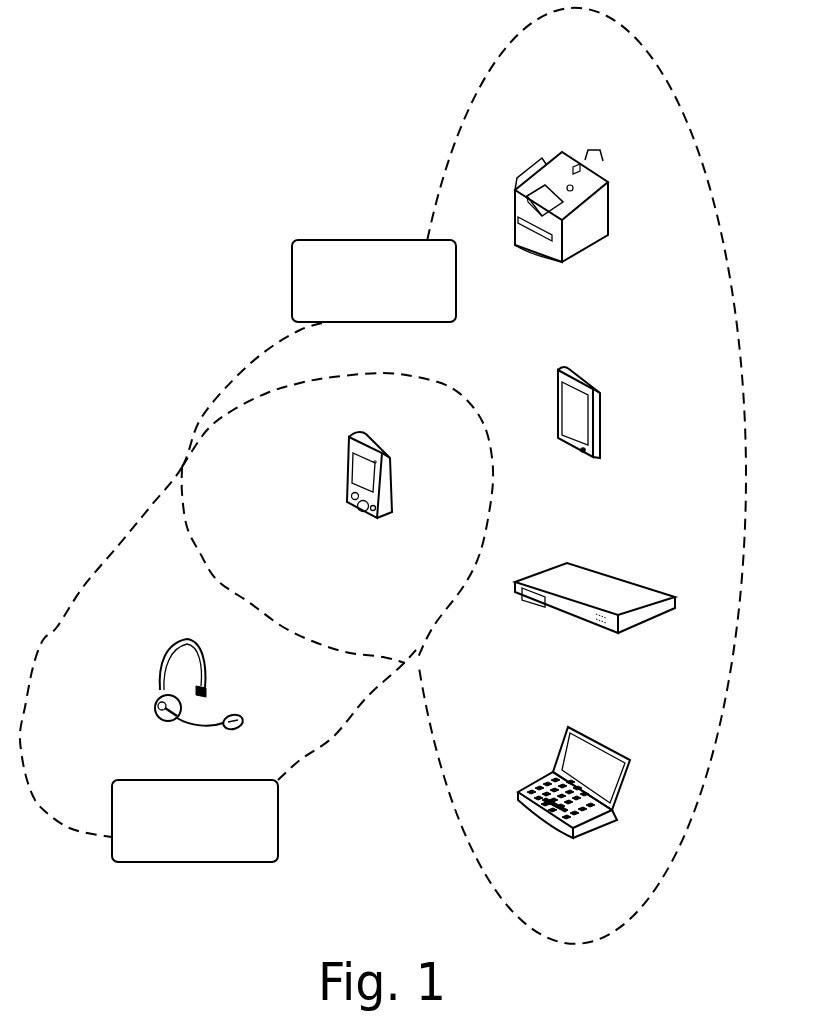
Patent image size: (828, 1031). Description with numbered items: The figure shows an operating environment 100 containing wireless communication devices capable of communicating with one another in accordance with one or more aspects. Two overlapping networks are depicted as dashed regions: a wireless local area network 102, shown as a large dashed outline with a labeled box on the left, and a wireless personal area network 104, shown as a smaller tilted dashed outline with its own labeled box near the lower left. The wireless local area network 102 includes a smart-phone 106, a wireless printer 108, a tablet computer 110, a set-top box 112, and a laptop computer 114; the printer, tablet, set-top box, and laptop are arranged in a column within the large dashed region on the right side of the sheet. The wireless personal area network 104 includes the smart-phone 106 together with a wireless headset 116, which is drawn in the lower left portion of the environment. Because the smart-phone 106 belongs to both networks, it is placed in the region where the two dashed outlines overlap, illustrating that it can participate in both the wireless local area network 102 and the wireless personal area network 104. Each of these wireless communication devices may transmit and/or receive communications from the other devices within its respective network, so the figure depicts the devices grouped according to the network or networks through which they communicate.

The operating environment 100 is at (125, 52).
The wireless local area network 102 is at (359, 310).
The wireless personal area network 104 is at (180, 850).
The smart-phone 106 is at (381, 448).
The wireless printer 108 is at (597, 153).
The tablet computer 110 is at (592, 383).
The set-top box 112 is at (657, 592).
The laptop computer 114 is at (617, 744).
The wireless headset 116 is at (168, 650).